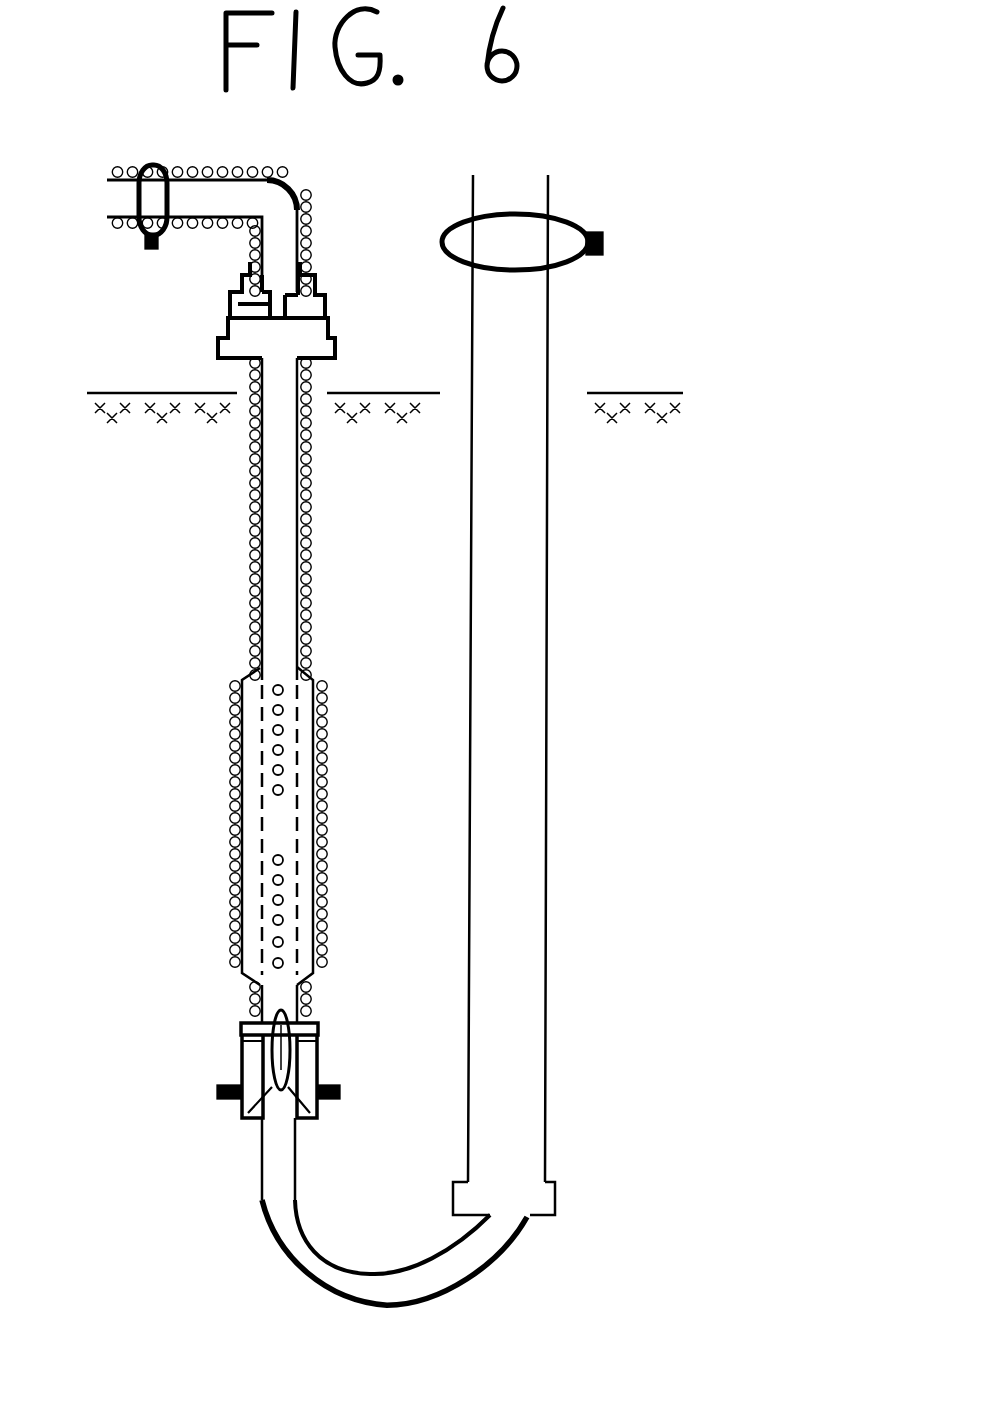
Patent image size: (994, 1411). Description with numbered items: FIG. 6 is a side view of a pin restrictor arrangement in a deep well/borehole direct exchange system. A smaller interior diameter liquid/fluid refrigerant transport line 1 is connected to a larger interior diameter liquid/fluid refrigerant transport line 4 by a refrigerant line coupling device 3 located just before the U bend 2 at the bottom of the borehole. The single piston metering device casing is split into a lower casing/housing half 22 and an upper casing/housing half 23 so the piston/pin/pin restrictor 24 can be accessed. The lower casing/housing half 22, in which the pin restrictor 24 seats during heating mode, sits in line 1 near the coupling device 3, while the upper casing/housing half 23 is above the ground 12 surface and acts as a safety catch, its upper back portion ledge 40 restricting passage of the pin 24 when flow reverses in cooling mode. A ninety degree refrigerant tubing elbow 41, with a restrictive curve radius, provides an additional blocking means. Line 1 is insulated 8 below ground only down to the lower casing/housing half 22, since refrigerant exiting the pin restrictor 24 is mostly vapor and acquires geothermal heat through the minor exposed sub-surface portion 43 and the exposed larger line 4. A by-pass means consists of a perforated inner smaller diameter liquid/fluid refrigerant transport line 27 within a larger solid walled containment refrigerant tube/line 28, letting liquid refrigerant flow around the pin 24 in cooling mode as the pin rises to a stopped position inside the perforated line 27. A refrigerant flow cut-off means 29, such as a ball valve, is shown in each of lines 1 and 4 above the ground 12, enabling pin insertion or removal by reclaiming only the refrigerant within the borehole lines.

The smaller interior diameter liquid/fluid refrigerant transport line 1 is at (278, 489).
The U bend 2 is at (400, 1272).
The refrigerant line coupling device 3 is at (555, 1197).
The larger interior diameter liquid/fluid refrigerant transport line 4 is at (527, 487).
The insulation 8 is at (307, 533).
The ground 12 is at (633, 392).
The lower casing/housing half 22 is at (240, 1063).
The upper casing/housing half 23 is at (336, 330).
The piston/pin/pin restrictor 24 is at (252, 1012).
The perforated inner smaller diameter liquid/fluid refrigerant transport line 27 is at (275, 870).
The larger solid walled containment refrigerant tube/line 28 is at (238, 745).
The refrigerant flow cut-off means 29 is at (138, 228).
The upper back portion ledge 40 is at (238, 305).
The ninety degree refrigerant tubing elbow 41 is at (293, 185).
The exposed sub-surface portion 43 is at (277, 1172).